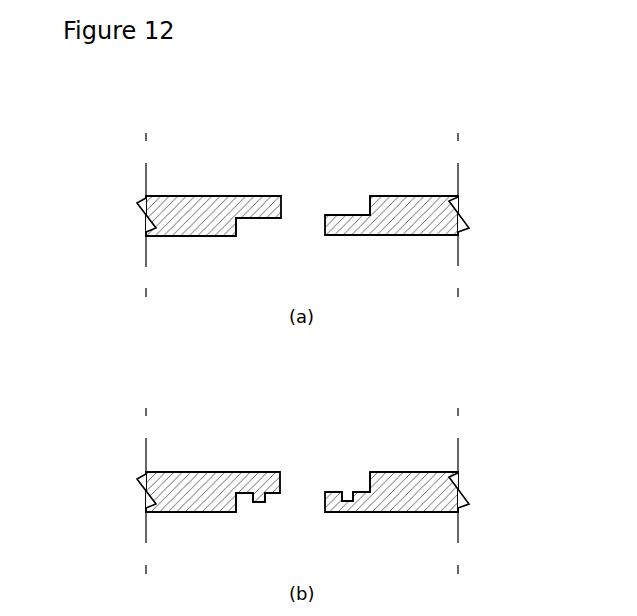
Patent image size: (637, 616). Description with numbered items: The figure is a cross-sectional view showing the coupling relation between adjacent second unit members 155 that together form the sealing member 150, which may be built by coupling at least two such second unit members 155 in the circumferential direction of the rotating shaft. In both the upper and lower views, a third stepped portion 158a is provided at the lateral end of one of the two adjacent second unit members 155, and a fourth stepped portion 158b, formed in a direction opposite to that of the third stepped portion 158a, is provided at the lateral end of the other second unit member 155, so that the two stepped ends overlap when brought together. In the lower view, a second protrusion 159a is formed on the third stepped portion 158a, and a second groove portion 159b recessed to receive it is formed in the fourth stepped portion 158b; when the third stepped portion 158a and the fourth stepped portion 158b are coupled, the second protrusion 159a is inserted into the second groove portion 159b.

The sealing member 150 is at (187, 95).
The second unit member 155 is at (198, 205).
The third stepped portion 158a is at (255, 218).
The fourth stepped portion 158b is at (350, 212).
The second protrusion 159a is at (260, 503).
The second groove portion 159b is at (347, 491).